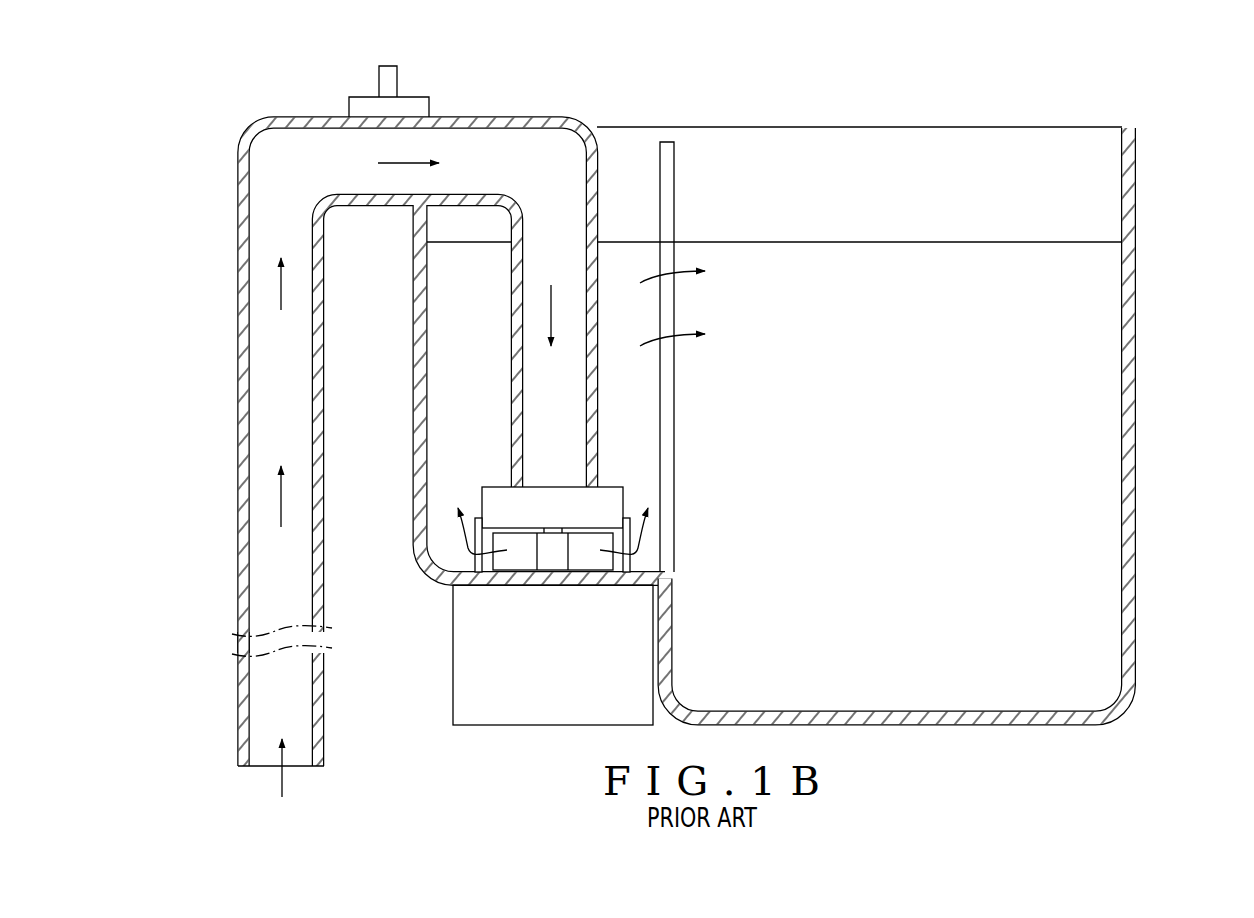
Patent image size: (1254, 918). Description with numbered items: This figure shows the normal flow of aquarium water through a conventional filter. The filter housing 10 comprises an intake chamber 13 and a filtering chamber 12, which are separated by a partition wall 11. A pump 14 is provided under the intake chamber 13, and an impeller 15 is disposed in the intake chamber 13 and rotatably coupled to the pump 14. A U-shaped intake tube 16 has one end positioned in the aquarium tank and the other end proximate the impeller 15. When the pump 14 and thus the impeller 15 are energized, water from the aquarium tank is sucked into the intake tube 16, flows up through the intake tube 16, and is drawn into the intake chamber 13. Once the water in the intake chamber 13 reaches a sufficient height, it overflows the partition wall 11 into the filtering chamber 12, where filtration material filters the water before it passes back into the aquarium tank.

The filter housing 10 is at (1148, 414).
The partition wall 11 is at (667, 147).
The filtering chamber 12 is at (985, 677).
The intake chamber 13 is at (427, 420).
The pump 14 is at (533, 715).
The impeller 15 is at (510, 553).
The U-shaped intake tube 16 is at (239, 420).